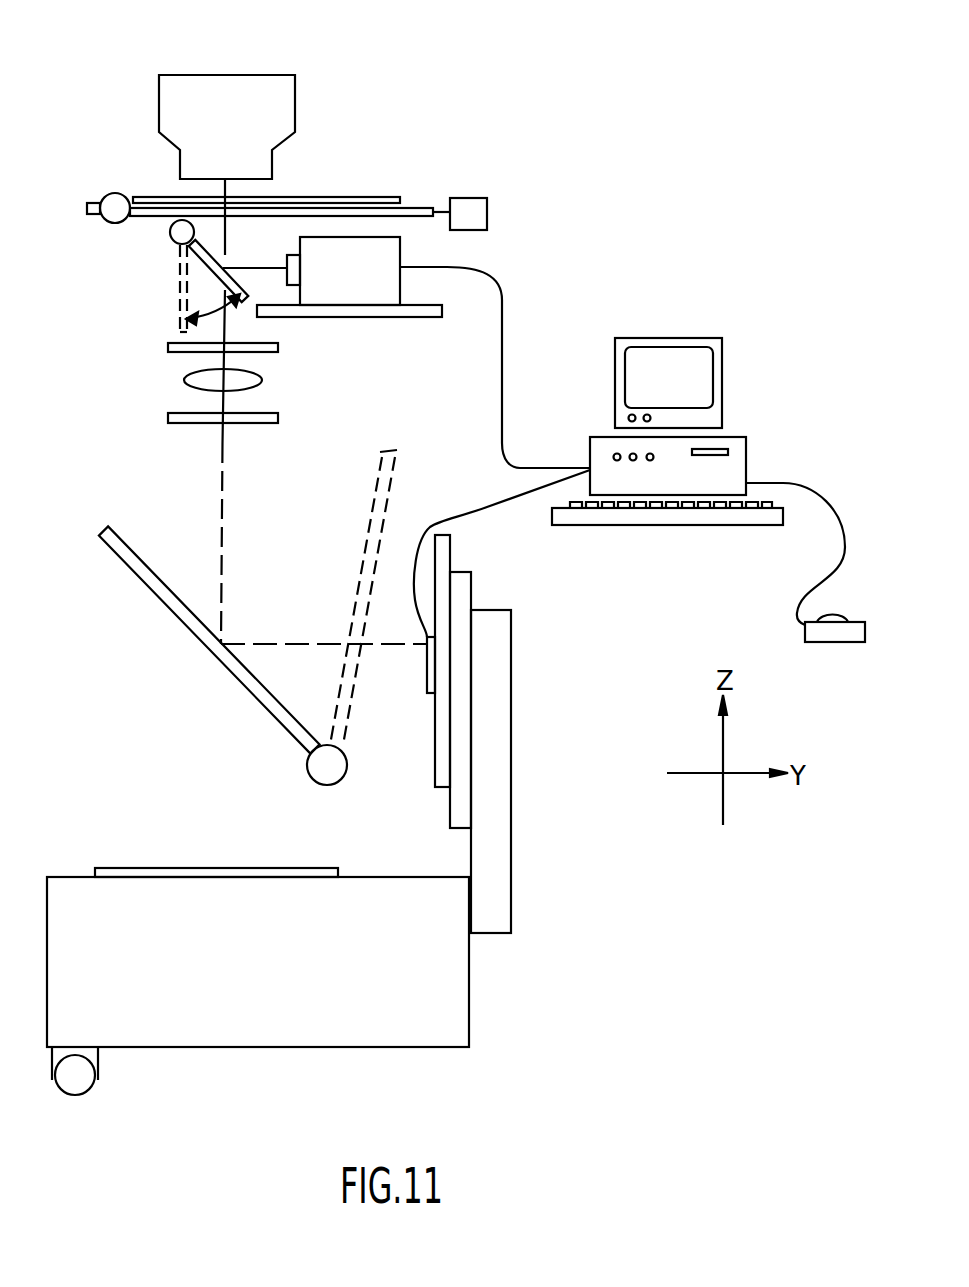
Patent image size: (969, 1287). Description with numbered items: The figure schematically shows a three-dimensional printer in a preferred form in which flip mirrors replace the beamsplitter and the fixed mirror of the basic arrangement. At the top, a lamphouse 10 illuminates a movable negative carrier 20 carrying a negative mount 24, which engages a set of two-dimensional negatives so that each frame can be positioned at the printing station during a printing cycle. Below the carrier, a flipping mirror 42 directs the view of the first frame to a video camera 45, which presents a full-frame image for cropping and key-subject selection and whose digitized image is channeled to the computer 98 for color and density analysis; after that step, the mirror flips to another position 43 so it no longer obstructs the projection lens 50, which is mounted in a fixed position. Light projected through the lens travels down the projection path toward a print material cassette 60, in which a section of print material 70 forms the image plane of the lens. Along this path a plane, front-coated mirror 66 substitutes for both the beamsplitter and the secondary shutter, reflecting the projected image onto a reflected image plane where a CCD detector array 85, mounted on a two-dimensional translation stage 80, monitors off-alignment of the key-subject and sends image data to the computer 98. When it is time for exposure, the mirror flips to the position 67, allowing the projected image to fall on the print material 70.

The lamphouse 10 is at (288, 107).
The movable negative carrier 20 is at (402, 212).
The negative mount 24 is at (317, 203).
The flipping mirror 42 is at (190, 260).
The flipped position of mirror 43 is at (180, 303).
The video camera 45 is at (395, 260).
The projection lens 50 is at (250, 380).
The print material cassette 60 is at (453, 1000).
The plane mirror 66 is at (105, 530).
The flipped position of plane mirror 67 is at (380, 452).
The print material 70 is at (167, 872).
The two-dimensional translation stage 80 is at (498, 838).
The CCD detector array 85 is at (430, 673).
The computer 98 is at (738, 452).